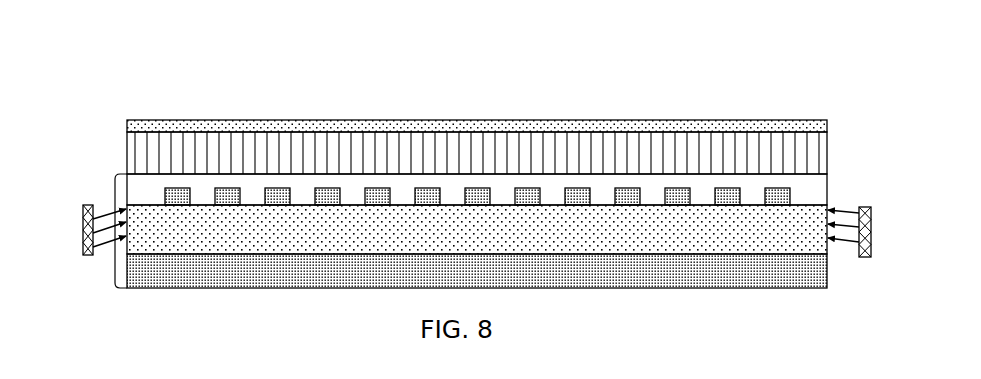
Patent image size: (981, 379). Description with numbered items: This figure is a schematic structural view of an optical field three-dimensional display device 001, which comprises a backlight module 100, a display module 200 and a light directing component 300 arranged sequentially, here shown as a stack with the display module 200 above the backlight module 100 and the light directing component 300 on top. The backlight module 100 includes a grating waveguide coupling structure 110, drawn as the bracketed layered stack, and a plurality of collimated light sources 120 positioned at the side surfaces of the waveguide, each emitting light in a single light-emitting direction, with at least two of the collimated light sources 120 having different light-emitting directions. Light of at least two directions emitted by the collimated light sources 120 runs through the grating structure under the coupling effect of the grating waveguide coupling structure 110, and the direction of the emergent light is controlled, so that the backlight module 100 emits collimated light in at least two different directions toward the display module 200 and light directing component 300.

The display device 001 is at (476, 144).
The backlight module 100 is at (481, 222).
The grating waveguide coupling structure 110 is at (115, 200).
The collimating light source 120 is at (85, 245).
The display module 200 is at (827, 160).
The light directing component 300 is at (827, 127).